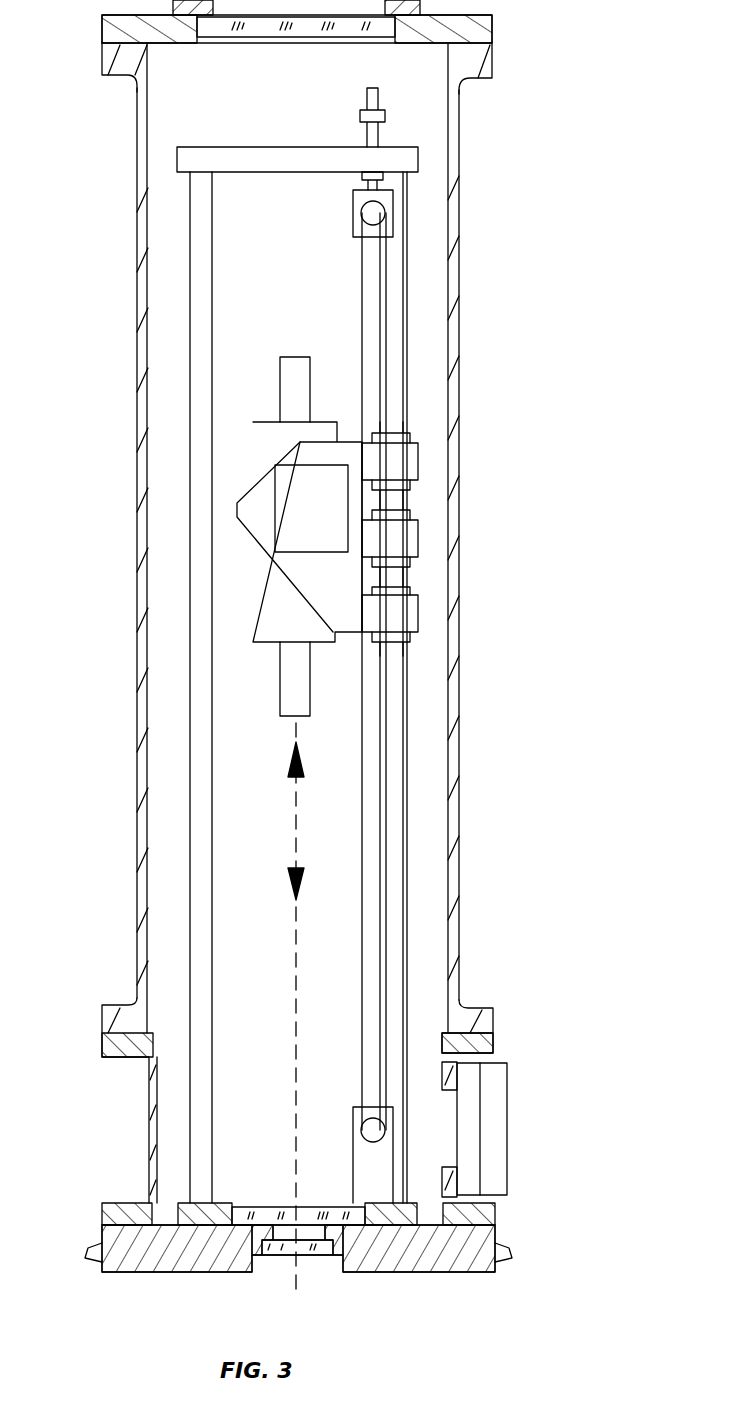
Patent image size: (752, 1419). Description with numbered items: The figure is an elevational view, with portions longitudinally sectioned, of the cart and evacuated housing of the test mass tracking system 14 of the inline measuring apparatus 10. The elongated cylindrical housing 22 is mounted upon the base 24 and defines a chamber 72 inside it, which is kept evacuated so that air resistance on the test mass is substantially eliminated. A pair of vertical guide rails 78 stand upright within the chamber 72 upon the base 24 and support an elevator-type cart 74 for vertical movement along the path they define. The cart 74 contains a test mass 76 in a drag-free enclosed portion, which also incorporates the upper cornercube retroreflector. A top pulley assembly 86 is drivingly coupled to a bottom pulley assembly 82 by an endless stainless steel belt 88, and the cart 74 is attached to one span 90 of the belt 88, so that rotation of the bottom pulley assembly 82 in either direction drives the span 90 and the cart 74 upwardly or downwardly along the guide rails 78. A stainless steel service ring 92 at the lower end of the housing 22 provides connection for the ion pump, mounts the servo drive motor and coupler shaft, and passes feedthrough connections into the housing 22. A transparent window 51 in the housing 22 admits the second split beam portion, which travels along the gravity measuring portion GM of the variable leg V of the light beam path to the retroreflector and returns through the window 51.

The inline measuring apparatus 10 is at (558, 108).
The test mass tracking system 14 is at (485, 257).
The cylindrical housing 22 is at (460, 548).
The base 24 is at (470, 1272).
The transparent window 51 is at (318, 1255).
The chamber 72 is at (239, 800).
The elevator-type cart 74 is at (335, 650).
The test mass 76 is at (245, 578).
The vertical guide rails 78 is at (188, 345).
The bottom pulley assembly 82 is at (363, 1130).
The top pulley assembly 86 is at (361, 214).
The endless stainless steel belt 88 is at (358, 948).
The belt span 90 is at (360, 322).
The stainless steel service ring 92 is at (493, 1045).
The gravity measuring portion GM is at (293, 858).
The variable leg V is at (296, 1115).